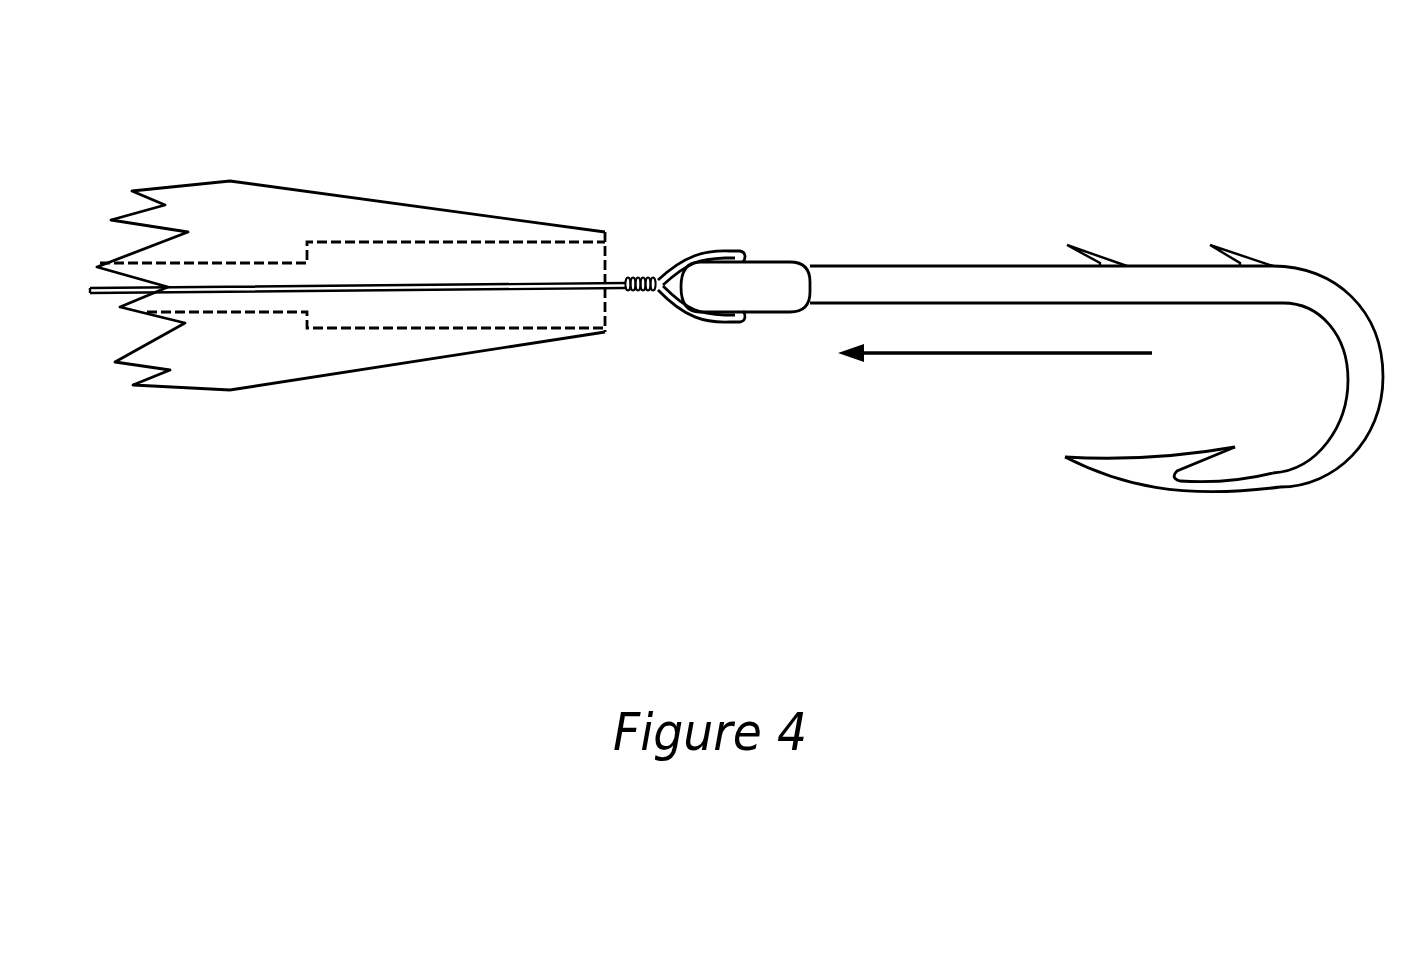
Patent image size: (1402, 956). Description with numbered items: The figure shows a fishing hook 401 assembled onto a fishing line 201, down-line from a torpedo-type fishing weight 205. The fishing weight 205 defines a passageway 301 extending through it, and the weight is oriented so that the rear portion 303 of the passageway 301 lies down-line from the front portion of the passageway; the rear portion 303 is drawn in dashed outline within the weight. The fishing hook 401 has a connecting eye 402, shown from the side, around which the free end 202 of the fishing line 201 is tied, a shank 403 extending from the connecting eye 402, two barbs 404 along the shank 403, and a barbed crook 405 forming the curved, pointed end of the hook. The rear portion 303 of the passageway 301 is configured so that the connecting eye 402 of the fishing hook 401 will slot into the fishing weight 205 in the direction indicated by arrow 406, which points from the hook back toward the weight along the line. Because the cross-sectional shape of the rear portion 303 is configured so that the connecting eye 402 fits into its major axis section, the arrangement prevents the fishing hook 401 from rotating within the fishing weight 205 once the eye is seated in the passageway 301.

The passageway 301 is at (241, 236).
The rear portion 303 is at (353, 242).
The fishing line 201 is at (577, 285).
The free end 202 is at (624, 277).
The fishing weight 205 is at (318, 345).
The fishing hook 401 is at (1020, 339).
The connecting eye 402 is at (758, 290).
The shank 403 is at (912, 283).
The barbs 404 is at (1103, 258).
The barbed crook 405 is at (1280, 478).
The arrow 406 is at (1007, 355).